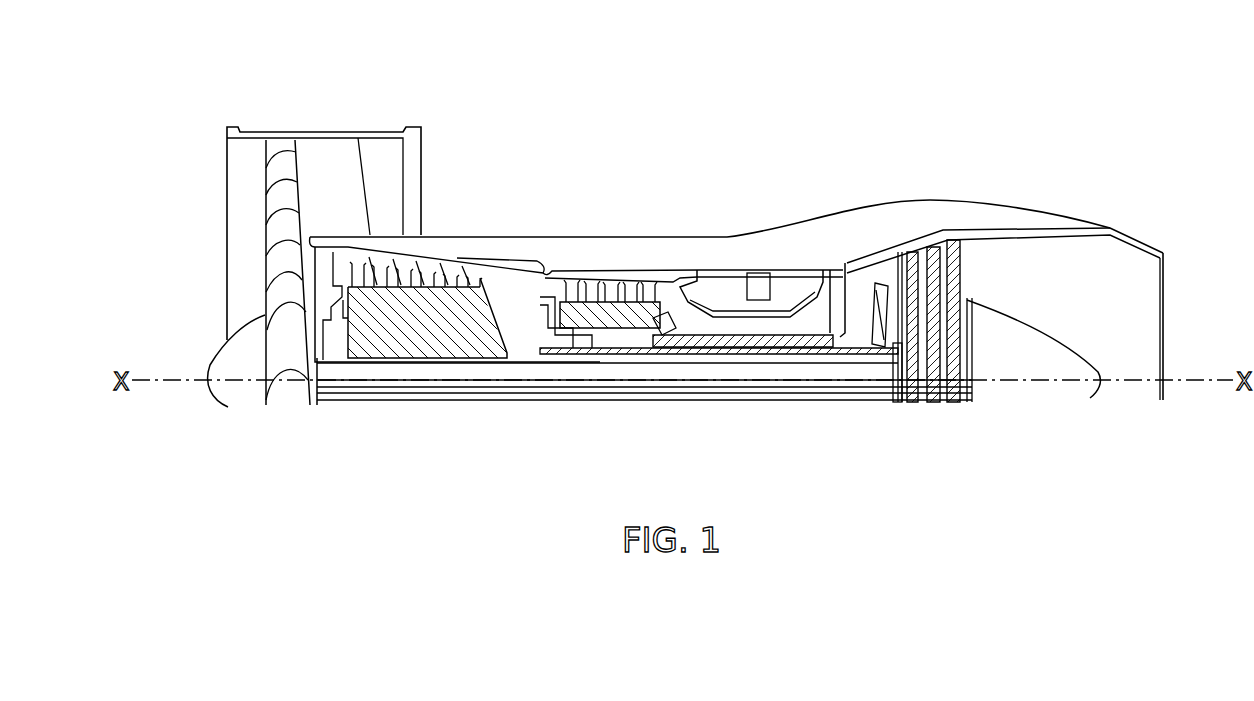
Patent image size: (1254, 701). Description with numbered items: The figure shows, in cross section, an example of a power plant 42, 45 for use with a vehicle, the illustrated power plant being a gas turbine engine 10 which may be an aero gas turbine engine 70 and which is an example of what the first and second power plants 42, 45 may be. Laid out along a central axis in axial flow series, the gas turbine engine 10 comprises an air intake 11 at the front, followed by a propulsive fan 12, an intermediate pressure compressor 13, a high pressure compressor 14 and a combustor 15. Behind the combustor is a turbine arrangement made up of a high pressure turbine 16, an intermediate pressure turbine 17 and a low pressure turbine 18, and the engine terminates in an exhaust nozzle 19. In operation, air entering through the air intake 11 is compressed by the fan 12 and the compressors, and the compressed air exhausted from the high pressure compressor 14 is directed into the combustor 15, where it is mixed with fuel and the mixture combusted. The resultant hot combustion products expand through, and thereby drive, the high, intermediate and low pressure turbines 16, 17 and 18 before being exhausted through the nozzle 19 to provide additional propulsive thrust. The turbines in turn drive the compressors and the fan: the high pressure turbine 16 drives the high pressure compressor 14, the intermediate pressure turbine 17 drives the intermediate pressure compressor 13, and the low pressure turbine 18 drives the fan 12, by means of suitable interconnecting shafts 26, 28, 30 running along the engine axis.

The gas turbine engine 10 is at (583, 160).
The air intake 11 is at (206, 254).
The propulsive fan 12 is at (290, 163).
The intermediate pressure compressor 13 is at (425, 298).
The high pressure compressor 14 is at (610, 290).
The combustor 15 is at (762, 262).
The high pressure turbine 16 is at (840, 270).
The intermediate pressure turbine 17 is at (872, 305).
The low pressure turbine 18 is at (965, 246).
The exhaust nozzle 19 is at (1152, 327).
The interconnecting shaft 26 is at (823, 337).
The interconnecting shaft 28 is at (560, 355).
The interconnecting shaft 30 is at (455, 400).
The first power plant 42 is at (935, 98).
The second power plant 45 is at (974, 60).
The aero gas turbine engine 70 is at (1145, 204).